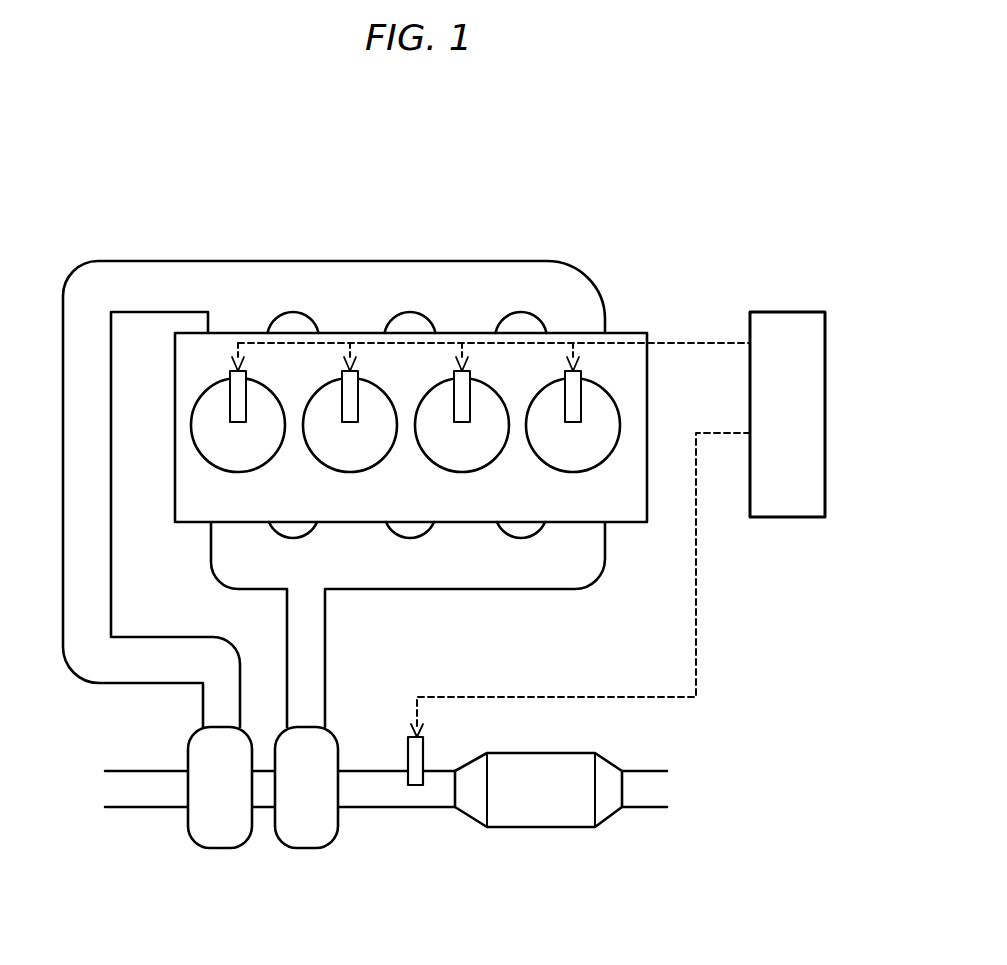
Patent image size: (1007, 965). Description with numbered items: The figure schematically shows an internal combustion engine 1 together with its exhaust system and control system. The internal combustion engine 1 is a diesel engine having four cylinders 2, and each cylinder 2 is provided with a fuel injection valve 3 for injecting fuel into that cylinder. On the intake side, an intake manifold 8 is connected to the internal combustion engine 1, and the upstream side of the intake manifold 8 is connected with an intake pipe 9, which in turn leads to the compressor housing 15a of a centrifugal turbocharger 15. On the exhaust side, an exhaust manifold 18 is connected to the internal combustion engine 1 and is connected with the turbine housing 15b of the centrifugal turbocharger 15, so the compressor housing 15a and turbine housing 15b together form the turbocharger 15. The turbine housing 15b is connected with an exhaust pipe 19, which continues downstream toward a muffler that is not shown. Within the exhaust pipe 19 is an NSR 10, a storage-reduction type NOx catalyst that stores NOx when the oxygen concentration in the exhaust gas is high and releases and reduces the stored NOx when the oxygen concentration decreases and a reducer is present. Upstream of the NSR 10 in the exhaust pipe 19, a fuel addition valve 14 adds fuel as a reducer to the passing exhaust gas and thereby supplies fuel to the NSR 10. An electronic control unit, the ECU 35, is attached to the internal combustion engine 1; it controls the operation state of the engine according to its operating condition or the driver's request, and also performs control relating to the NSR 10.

The internal combustion engine 1 is at (618, 333).
The cylinder 2 is at (205, 458).
The fuel injection valve 3 is at (228, 410).
The intake manifold 8 is at (418, 262).
The intake pipe 9 is at (112, 563).
The NSR 10 is at (530, 828).
The fuel addition valve 14 is at (423, 758).
The centrifugal turbocharger 15 is at (269, 826).
The compressor housing 15a is at (193, 840).
The turbine housing 15b is at (333, 840).
The exhaust manifold 18 is at (378, 590).
The exhaust pipe 19 is at (370, 770).
The electronic control unit (ECU) 35 is at (785, 308).